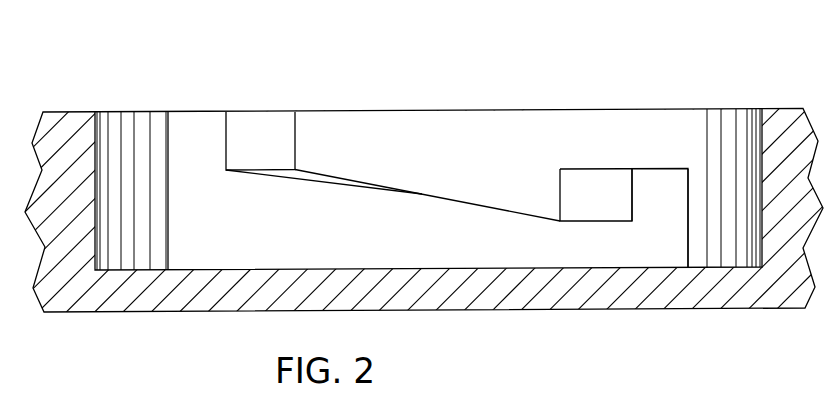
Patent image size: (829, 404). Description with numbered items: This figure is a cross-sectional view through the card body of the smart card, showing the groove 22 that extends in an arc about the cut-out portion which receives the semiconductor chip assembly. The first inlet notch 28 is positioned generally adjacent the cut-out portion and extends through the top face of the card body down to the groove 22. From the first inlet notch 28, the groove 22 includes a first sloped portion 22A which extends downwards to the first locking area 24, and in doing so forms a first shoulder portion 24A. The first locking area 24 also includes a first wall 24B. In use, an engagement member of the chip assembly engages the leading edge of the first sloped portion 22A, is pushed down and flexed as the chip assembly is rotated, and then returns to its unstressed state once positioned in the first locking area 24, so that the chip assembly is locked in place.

The first inlet notch 28 is at (209, 100).
The groove 22 is at (455, 203).
The first sloped portion 22A is at (357, 186).
The first locking area 24 is at (653, 182).
The first shoulder portion 24A is at (562, 192).
The first wall 24B is at (688, 212).